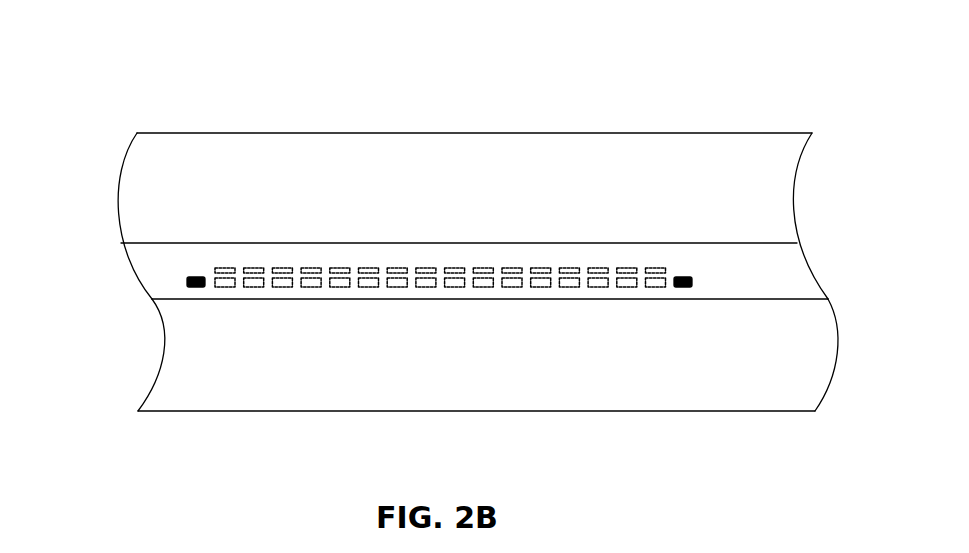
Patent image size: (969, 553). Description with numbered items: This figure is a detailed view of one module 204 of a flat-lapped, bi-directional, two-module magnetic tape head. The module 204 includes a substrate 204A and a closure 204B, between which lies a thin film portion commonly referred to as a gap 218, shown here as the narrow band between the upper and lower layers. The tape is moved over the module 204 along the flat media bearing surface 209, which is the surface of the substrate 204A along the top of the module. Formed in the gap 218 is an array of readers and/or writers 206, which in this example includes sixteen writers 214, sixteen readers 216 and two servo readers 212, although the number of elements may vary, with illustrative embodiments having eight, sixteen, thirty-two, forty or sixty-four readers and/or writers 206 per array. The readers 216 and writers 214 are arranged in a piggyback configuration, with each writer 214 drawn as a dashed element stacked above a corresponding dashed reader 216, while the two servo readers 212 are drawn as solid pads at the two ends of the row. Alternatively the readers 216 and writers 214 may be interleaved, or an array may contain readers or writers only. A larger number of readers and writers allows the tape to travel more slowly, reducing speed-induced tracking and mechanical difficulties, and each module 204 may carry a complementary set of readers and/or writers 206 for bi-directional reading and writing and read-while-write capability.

The module 204 is at (152, 108).
The substrate 204A is at (253, 133).
The closure 204B is at (310, 412).
The media bearing surface 209 is at (395, 205).
The gap 218 is at (813, 270).
The readers and/or writers 206 is at (716, 269).
The servo readers 212 is at (187, 281).
The writers 214 is at (567, 267).
The readers 216 is at (570, 288).